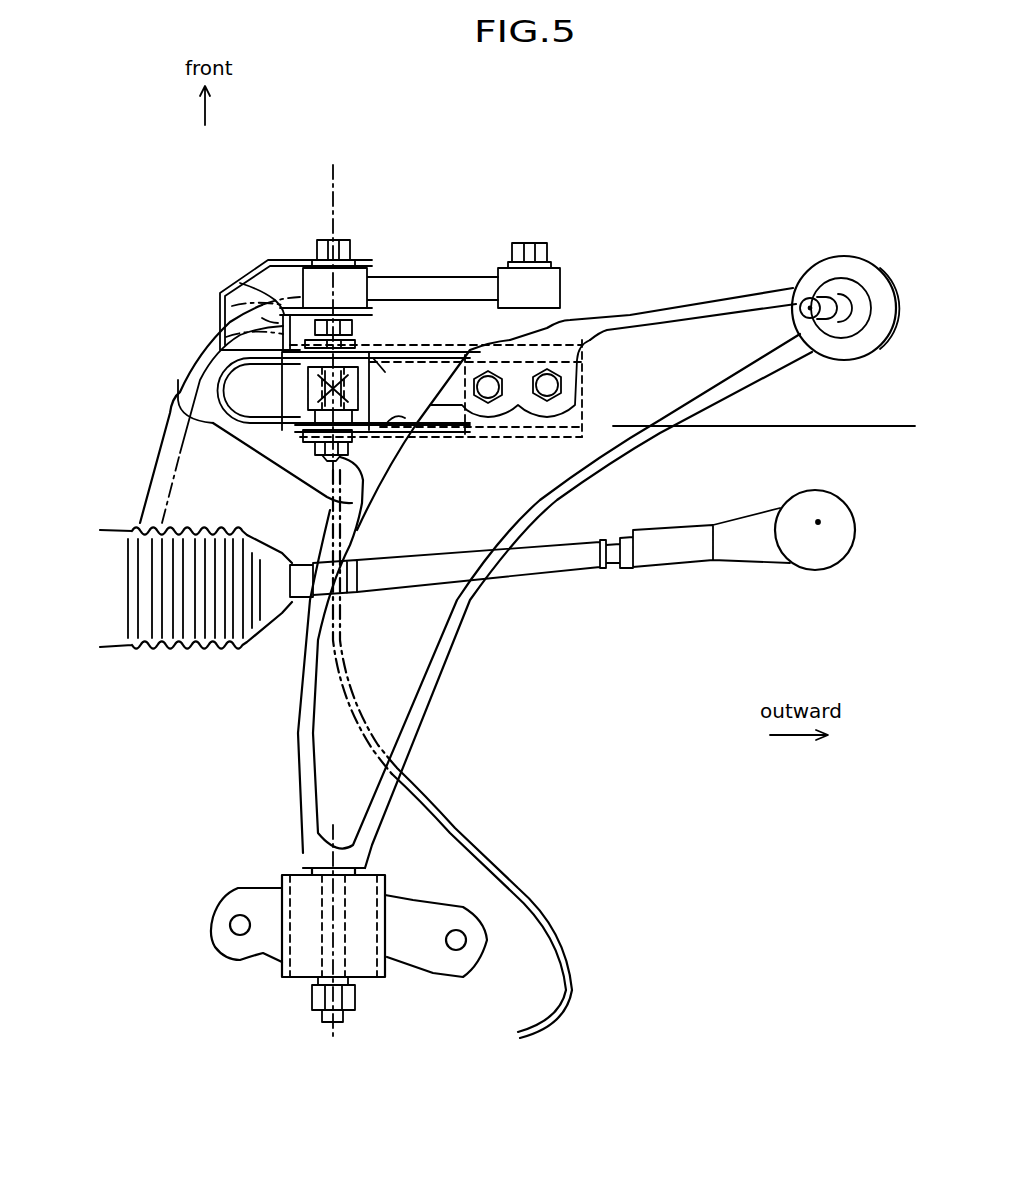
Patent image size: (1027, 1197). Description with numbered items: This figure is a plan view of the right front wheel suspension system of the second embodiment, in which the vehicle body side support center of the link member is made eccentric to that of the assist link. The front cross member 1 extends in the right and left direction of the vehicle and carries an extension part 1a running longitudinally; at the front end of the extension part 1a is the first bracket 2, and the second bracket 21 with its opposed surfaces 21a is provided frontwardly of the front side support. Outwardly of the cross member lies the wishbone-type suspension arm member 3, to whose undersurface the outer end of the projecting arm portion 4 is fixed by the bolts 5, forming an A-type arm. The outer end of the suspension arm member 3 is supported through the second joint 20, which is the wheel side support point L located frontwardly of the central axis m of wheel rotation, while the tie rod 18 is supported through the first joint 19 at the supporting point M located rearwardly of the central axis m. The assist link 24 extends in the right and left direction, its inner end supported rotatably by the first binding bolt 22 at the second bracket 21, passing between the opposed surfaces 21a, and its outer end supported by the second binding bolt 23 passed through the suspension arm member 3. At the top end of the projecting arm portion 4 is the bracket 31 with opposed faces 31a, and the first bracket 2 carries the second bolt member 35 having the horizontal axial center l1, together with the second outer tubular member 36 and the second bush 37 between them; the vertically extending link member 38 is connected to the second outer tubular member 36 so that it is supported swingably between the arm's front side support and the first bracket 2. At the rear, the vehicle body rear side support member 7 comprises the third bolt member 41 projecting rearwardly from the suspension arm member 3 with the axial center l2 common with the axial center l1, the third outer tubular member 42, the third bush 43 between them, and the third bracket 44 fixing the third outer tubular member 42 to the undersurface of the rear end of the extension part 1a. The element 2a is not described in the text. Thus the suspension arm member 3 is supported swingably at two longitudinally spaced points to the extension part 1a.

The front cross member 1 is at (482, 848).
The extension part 1a is at (407, 827).
The first bracket 2 is at (235, 437).
The cross member flange 2a is at (262, 318).
The suspension arm member 3 is at (670, 308).
The projecting arm portion 4 is at (456, 352).
The bolts 5 is at (547, 390).
The vehicle body rear side support member 7 is at (285, 1008).
The tie rod 18 is at (566, 576).
The first joint 19 is at (822, 568).
The second joint 20 is at (862, 272).
The second bracket 21 is at (252, 270).
The opposed surfaces 21a is at (262, 318).
The first binding bolt 22 is at (343, 240).
The second binding bolt 23 is at (532, 243).
The assist link 24 is at (432, 277).
The bracket 31 is at (380, 322).
The opposed faces 31a is at (385, 355).
The second bolt member 35 is at (333, 458).
The second outer tubular member 36 is at (358, 386).
The second bush 37 is at (400, 348).
The link member 38 is at (308, 388).
The third bolt member 41 is at (324, 1022).
The third outer tubular member 42 is at (392, 898).
The third bush 43 is at (303, 878).
The third bracket 44 is at (275, 878).
The wheel side support point L is at (810, 300).
The supporting point M is at (820, 522).
The central axis m is at (891, 415).
The axial center l1 is at (333, 205).
The axial center l2 is at (352, 1040).